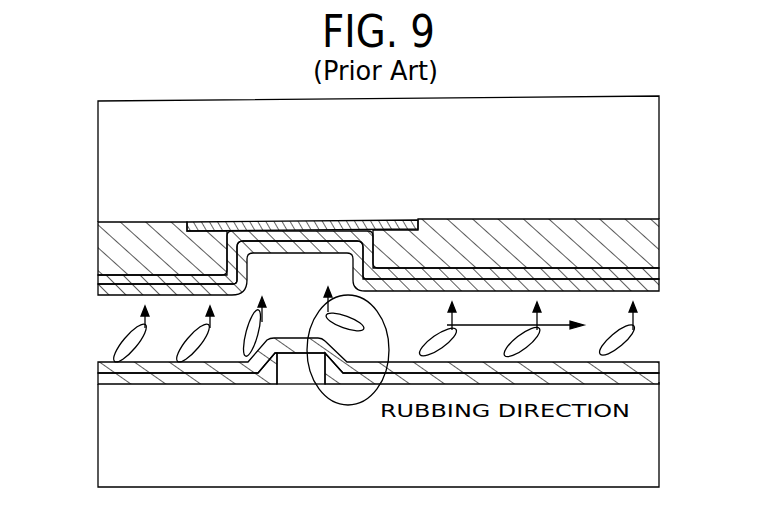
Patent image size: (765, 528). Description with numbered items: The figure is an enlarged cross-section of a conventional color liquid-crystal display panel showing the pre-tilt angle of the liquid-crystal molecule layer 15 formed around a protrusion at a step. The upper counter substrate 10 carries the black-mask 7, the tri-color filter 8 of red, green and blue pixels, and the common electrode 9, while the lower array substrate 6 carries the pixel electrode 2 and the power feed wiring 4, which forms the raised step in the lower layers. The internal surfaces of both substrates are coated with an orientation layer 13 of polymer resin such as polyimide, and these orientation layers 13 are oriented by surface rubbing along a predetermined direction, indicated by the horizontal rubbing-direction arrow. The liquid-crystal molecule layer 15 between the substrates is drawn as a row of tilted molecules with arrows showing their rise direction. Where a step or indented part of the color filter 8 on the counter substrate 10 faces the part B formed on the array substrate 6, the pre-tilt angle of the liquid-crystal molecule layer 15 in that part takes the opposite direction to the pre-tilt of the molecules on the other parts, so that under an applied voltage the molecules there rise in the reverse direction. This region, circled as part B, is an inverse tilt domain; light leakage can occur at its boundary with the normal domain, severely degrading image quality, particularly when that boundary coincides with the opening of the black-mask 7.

The counter substrate 10 is at (135, 168).
The black-mask 7 is at (252, 223).
The tri-color filter 8 is at (113, 243).
The common electrode 9 is at (650, 268).
The orientation layer 13 is at (107, 288).
The liquid-crystal molecule layer 15 is at (193, 348).
The pixel electrode 2 is at (112, 387).
The power feed wiring 4 is at (300, 373).
The array substrate 6 is at (133, 467).
The part B is at (348, 404).